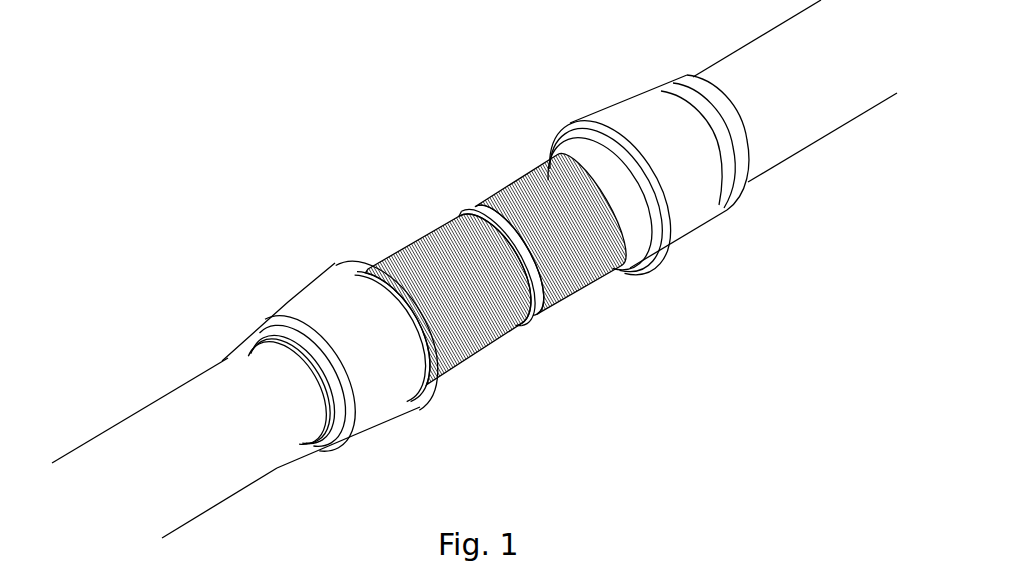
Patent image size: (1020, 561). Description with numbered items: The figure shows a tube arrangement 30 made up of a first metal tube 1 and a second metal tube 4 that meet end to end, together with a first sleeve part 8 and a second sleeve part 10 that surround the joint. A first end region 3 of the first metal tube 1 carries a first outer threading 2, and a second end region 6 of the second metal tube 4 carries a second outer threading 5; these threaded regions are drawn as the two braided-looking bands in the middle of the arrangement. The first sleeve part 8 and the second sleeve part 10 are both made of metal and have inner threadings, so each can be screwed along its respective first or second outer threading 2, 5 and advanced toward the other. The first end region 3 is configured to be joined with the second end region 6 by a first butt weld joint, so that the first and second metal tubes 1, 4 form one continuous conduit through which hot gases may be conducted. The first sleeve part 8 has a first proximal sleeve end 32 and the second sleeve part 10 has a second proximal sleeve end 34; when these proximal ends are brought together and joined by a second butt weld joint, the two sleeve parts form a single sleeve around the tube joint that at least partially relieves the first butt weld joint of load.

The first metal tube 1 is at (197, 407).
The first outer threading 2 is at (409, 231).
The first end region 3 is at (494, 363).
The second metal tube 4 is at (782, 95).
The second outer threading 5 is at (504, 172).
The second end region 6 is at (590, 308).
The first sleeve part 8 is at (373, 367).
The second sleeve part 10 is at (677, 178).
The tube arrangement 30 is at (230, 149).
The first proximal sleeve end 32 is at (334, 268).
The second proximal sleeve end 34 is at (570, 127).